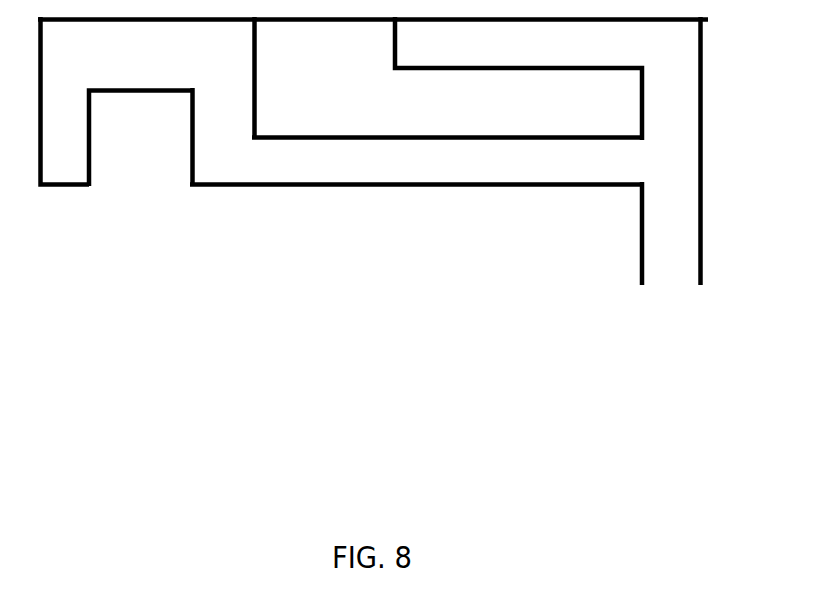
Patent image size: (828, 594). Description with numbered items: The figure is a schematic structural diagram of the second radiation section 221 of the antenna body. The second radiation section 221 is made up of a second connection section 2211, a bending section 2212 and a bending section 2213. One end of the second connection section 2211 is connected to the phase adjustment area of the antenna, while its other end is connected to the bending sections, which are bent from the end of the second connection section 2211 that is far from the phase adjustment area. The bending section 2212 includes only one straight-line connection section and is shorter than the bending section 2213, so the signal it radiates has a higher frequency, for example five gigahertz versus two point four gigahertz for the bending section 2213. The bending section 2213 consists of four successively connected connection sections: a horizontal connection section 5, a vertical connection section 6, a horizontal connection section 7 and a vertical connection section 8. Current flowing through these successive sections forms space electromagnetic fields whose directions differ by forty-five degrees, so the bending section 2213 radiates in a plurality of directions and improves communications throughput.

The second radiation section 221 is at (373, 260).
The second connection section 2211 is at (668, 142).
The bending section 2212 is at (468, 37).
The bending section 2213 is at (340, 218).
The connection section 5 is at (416, 243).
The connection section 6 is at (232, 123).
The connection section 7 is at (140, 65).
The connection section 8 is at (63, 142).